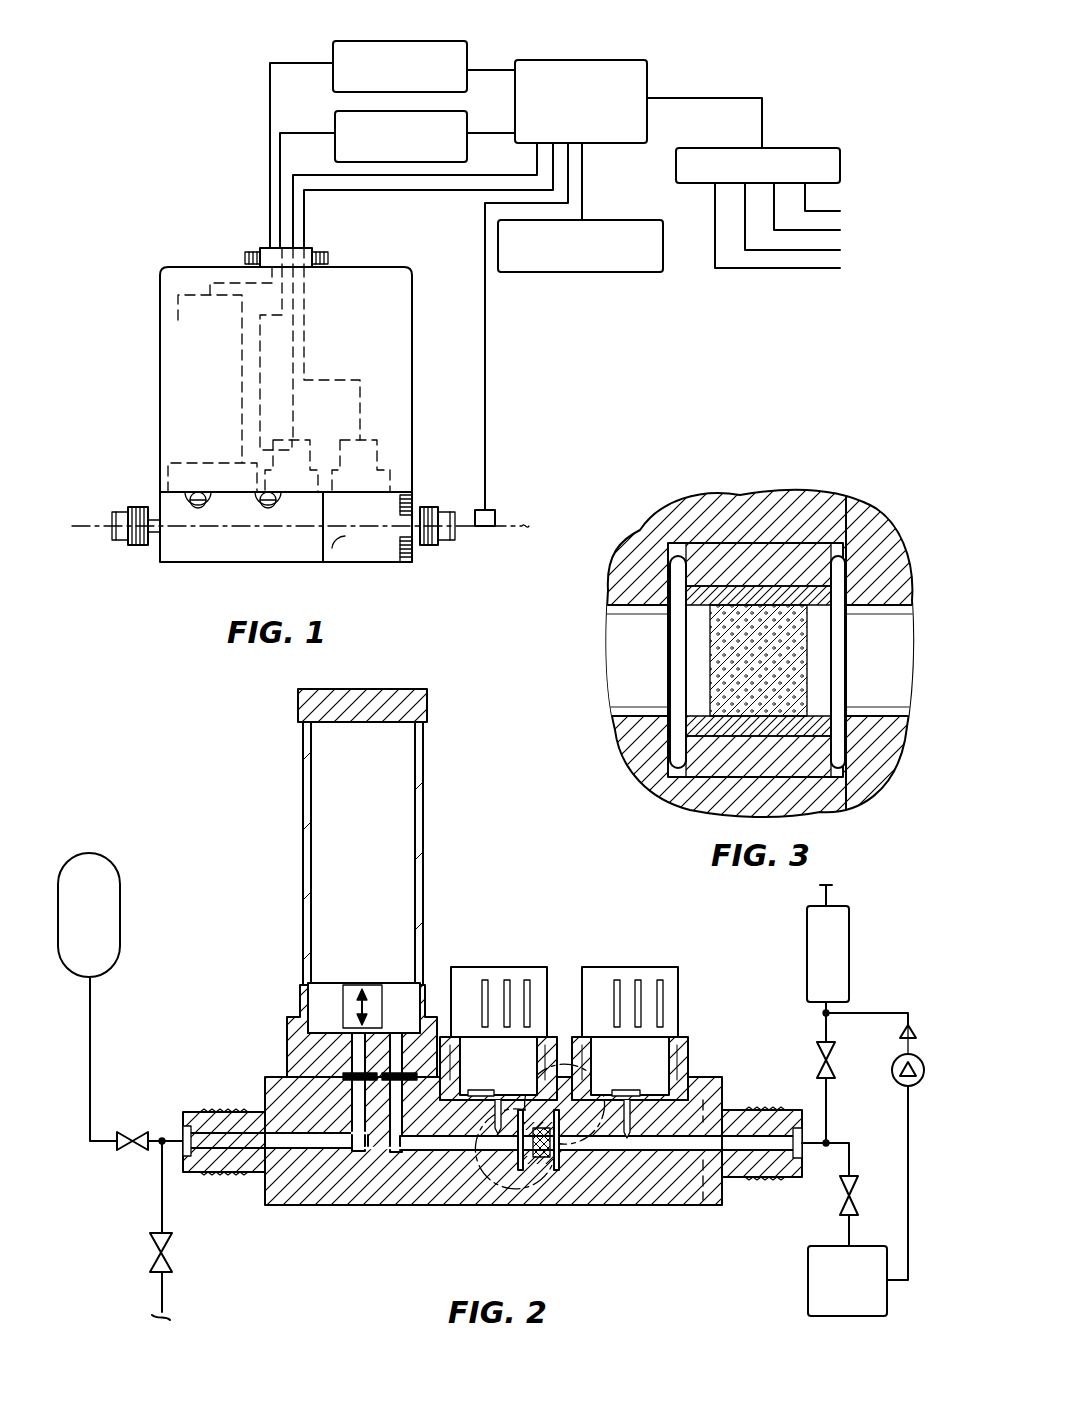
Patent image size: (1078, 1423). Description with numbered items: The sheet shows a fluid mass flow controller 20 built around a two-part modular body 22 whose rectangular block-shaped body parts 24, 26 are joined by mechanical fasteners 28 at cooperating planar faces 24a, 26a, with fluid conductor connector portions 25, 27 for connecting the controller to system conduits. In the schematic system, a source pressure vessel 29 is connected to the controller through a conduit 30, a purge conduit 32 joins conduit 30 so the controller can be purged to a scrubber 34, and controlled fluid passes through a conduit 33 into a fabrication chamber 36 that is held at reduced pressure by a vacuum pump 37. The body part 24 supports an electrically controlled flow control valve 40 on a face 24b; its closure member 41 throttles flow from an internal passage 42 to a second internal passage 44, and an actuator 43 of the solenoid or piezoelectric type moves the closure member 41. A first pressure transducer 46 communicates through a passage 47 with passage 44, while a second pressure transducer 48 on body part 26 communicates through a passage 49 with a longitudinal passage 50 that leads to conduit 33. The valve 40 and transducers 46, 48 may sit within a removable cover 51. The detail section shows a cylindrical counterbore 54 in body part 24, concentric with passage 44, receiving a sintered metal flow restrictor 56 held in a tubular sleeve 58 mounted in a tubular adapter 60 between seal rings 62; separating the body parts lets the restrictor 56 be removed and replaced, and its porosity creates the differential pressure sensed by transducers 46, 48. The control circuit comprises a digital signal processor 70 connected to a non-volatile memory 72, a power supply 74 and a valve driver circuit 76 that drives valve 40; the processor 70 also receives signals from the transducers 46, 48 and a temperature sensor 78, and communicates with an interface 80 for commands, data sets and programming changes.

In FIG. 1, the fluid mass flow controller 20 is at (318, 352).
In FIG. 2, the fluid mass flow controller 20 is at (491, 1006).
In FIG. 1, the modular body 22 is at (300, 556).
In FIG. 2, the modular body 22 is at (494, 1155).
In FIG. 1, the body part 24 is at (153, 553).
In FIG. 3, the body part 24 is at (615, 748).
In FIG. 2, the body part 24 is at (315, 1207).
In FIG. 1, the planar face 24a is at (332, 548).
In FIG. 3, the planar face 24a is at (852, 800).
In FIG. 2, the planar face 24a is at (578, 1178).
In FIG. 2, the face 24b is at (303, 1050).
In FIG. 1, the fluid conductor connector portion 25 is at (130, 507).
In FIG. 2, the fluid conductor connector portion 25 is at (222, 1112).
In FIG. 1, the body part 26 is at (397, 562).
In FIG. 3, the body part 26 is at (880, 560).
In FIG. 2, the body part 26 is at (686, 1207).
In FIG. 1, the planar face 26a is at (318, 535).
In FIG. 3, the planar face 26a is at (835, 508).
In FIG. 2, the planar face 26a is at (553, 1207).
In FIG. 1, the fluid conductor connector portion 27 is at (445, 505).
In FIG. 2, the fluid conductor connector portion 27 is at (768, 1110).
In FIG. 1, the mechanical fasteners 28 is at (412, 505).
In FIG. 2, the gas supply 29 is at (120, 877).
In FIG. 2, the conduit 30 is at (90, 1027).
In FIG. 2, the purge conduit 32 is at (162, 1200).
In FIG. 2, the conduit 33 is at (849, 1162).
In FIG. 2, the scrubber 34 is at (849, 950).
In FIG. 2, the fabrication chamber 36 is at (808, 1296).
In FIG. 2, the vacuum pump 37 is at (892, 1068).
In FIG. 1, the flow control valve 40 is at (178, 320).
In FIG. 2, the flow control valve 40 is at (322, 861).
In FIG. 2, the closure member 41 is at (342, 993).
In FIG. 2, the internal passage 42 is at (276, 1150).
In FIG. 2, the actuator 43 is at (327, 800).
In FIG. 3, the second internal passage 44 is at (628, 618).
In FIG. 2, the second internal passage 44 is at (450, 1207).
In FIG. 2, the first pressure transducer 46 is at (473, 967).
In FIG. 2, the passage 47 is at (512, 1093).
In FIG. 2, the second pressure transducer 48 is at (600, 967).
In FIG. 2, the passage 49 is at (668, 1060).
In FIG. 3, the longitudinal passage 50 is at (885, 612).
In FIG. 2, the longitudinal passage 50 is at (768, 1177).
In FIG. 1, the removable cover 51 is at (200, 267).
In FIG. 3, the cylindrical counterbore 54 is at (730, 548).
In FIG. 3, the flow restrictor 56 is at (702, 653).
In FIG. 2, the flow restrictor 56 is at (534, 1200).
In FIG. 3, the tubular sleeve 58 is at (724, 740).
In FIG. 3, the tubular adapter 60 is at (695, 770).
In FIG. 3, the seal rings 62 is at (672, 582).
In FIG. 1, the digital signal processor 70 is at (588, 60).
In FIG. 1, the non-volatile memory 72 is at (595, 272).
In FIG. 1, the power supply 74 is at (428, 41).
In FIG. 1, the valve driver circuit 76 is at (335, 123).
In FIG. 1, the temperature sensor 78 is at (495, 510).
In FIG. 1, the interface 80 is at (805, 148).